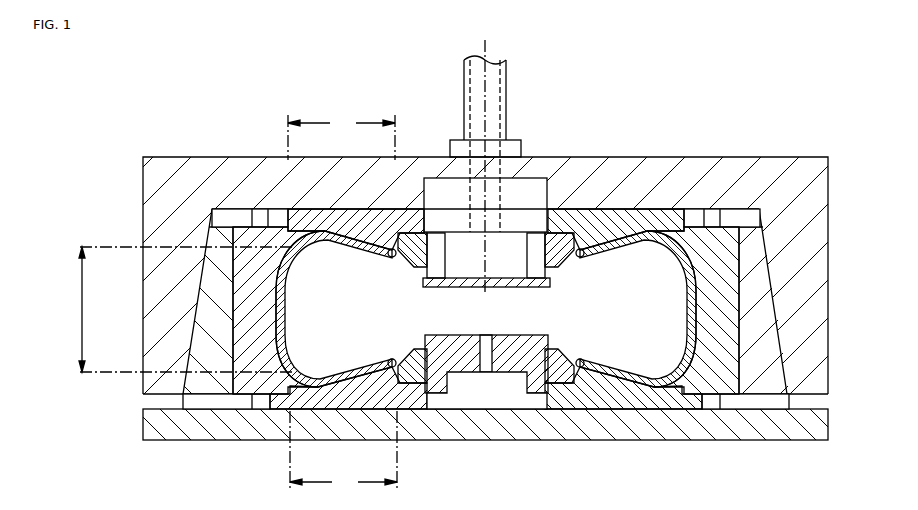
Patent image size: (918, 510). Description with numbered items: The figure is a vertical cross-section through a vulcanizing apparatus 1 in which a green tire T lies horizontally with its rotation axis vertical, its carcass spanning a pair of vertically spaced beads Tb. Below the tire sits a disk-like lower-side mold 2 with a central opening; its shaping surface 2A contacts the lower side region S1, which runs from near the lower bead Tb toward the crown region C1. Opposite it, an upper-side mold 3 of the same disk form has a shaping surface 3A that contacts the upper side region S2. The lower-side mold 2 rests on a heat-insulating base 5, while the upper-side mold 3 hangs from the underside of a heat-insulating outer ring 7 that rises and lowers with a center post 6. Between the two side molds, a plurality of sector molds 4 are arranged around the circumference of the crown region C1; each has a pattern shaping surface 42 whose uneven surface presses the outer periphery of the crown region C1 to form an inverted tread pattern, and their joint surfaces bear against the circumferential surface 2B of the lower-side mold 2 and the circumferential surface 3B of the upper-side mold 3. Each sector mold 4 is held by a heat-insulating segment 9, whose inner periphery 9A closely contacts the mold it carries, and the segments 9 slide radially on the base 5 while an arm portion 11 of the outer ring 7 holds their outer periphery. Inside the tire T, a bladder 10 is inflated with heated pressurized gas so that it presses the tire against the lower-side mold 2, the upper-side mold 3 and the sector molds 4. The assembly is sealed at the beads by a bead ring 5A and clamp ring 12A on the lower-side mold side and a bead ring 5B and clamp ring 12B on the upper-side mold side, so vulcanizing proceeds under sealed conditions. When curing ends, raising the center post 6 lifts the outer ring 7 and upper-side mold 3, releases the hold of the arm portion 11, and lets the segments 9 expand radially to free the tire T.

The vulcanizing apparatus 1 is at (410, 89).
The lower-side mold 2 is at (348, 402).
The shaping surface 2A is at (330, 382).
The circumferential surface 2B is at (284, 411).
The upper-side mold 3 is at (333, 209).
The shaping surface 3A is at (338, 244).
The circumferential surface 3B is at (264, 209).
The sector mold 4 is at (228, 224).
The base 5 is at (493, 432).
The bead ring 5A is at (533, 335).
The bead ring 5B is at (443, 283).
The center post 6 is at (497, 106).
The outer ring 7 is at (590, 172).
The segment 9 is at (185, 236).
The inner periphery 9A is at (202, 337).
The bladder 10 is at (310, 266).
The arm portion 11 is at (145, 302).
The clamp ring 12A is at (410, 411).
The clamp ring 12B is at (410, 209).
The pattern shaping surface 42 is at (292, 318).
The tire T is at (645, 222).
The bead Tb is at (391, 259).
The crown region C1 is at (181, 309).
The side region S1 is at (343, 450).
The side region S2 is at (341, 137).